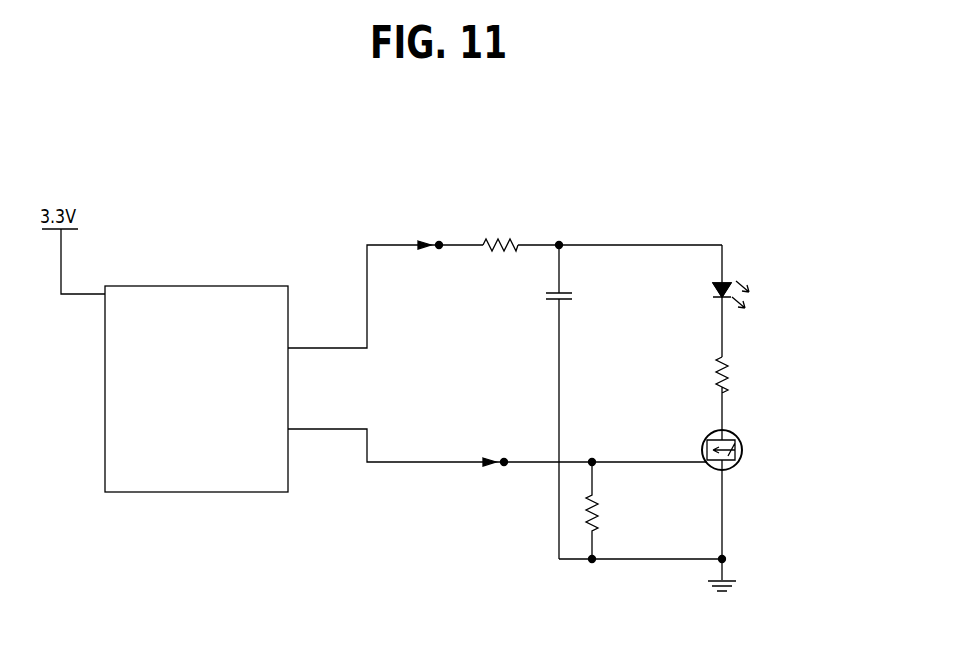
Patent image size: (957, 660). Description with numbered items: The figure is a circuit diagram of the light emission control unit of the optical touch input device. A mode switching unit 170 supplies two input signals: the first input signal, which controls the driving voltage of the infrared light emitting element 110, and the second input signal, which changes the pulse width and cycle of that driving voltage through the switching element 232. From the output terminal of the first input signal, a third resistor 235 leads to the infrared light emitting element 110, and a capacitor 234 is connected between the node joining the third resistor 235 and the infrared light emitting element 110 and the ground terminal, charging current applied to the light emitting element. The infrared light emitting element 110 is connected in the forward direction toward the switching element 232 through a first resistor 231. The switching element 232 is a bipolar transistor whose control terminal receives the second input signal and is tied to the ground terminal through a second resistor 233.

The mode switching unit 170 is at (240, 286).
The third resistor R3 235 is at (500, 216).
The capacitor C1 234 is at (600, 278).
The infrared light emitting element 110 is at (745, 278).
The first resistor R1 231 is at (763, 373).
The switching element Q1 232 is at (783, 455).
The second resistor R2 233 is at (634, 515).